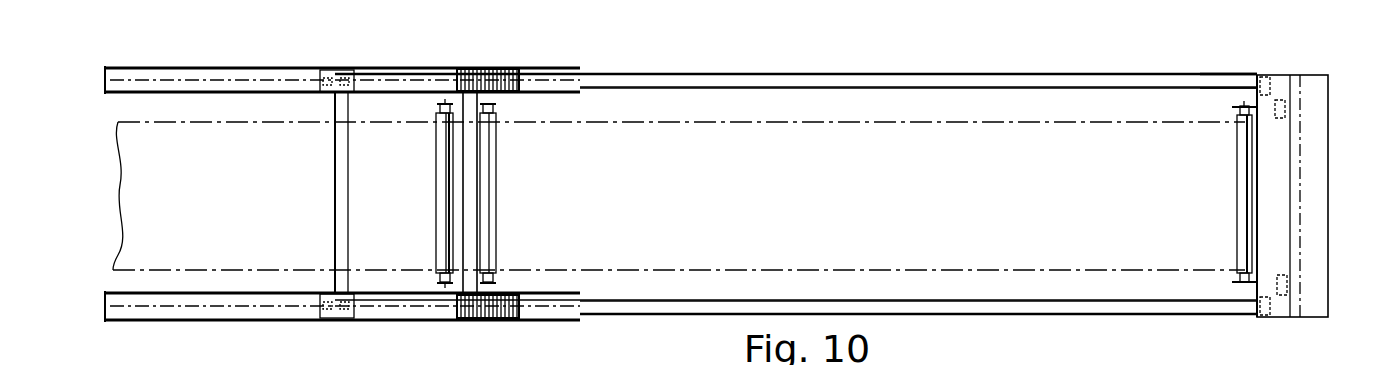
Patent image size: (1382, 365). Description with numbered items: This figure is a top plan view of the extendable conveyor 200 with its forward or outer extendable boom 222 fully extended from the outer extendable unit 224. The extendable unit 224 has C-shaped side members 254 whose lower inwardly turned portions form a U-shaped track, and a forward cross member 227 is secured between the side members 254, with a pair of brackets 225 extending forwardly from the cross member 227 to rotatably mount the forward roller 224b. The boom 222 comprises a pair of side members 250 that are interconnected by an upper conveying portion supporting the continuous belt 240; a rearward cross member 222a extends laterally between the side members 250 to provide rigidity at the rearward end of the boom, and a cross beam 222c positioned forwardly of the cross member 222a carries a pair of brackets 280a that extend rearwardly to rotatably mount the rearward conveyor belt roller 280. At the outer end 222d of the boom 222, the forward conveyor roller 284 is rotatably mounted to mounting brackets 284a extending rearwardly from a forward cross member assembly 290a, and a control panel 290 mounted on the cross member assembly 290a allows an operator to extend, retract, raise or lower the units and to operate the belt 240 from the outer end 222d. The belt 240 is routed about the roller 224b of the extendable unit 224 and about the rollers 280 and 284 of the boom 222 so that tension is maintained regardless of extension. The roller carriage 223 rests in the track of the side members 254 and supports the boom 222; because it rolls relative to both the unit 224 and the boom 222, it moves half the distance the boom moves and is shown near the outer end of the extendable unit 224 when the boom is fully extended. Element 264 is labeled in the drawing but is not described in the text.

The extendable conveyor 200 is at (294, 26).
The outer extendable unit 224 is at (203, 72).
The side members 254 is at (190, 293).
The collar 264 is at (323, 70).
The extendable boom 222 is at (793, 82).
The side members 250 is at (747, 90).
The continuous belt 240 is at (887, 268).
The rearward cross member 222a is at (340, 180).
The cross beam 222c is at (447, 100).
The brackets 225 is at (492, 93).
The roller carriage 223 is at (518, 297).
The rearward conveyor belt roller 280 is at (438, 172).
The brackets 280a is at (450, 287).
The forward roller 224b is at (498, 167).
The forward cross member 227 is at (472, 233).
The outer end 222d is at (1233, 82).
The control panel 290 is at (1282, 97).
The forward cross member assembly 290a is at (1260, 202).
The forward conveyor roller 284 is at (1243, 183).
The mounting brackets 284a is at (1240, 93).